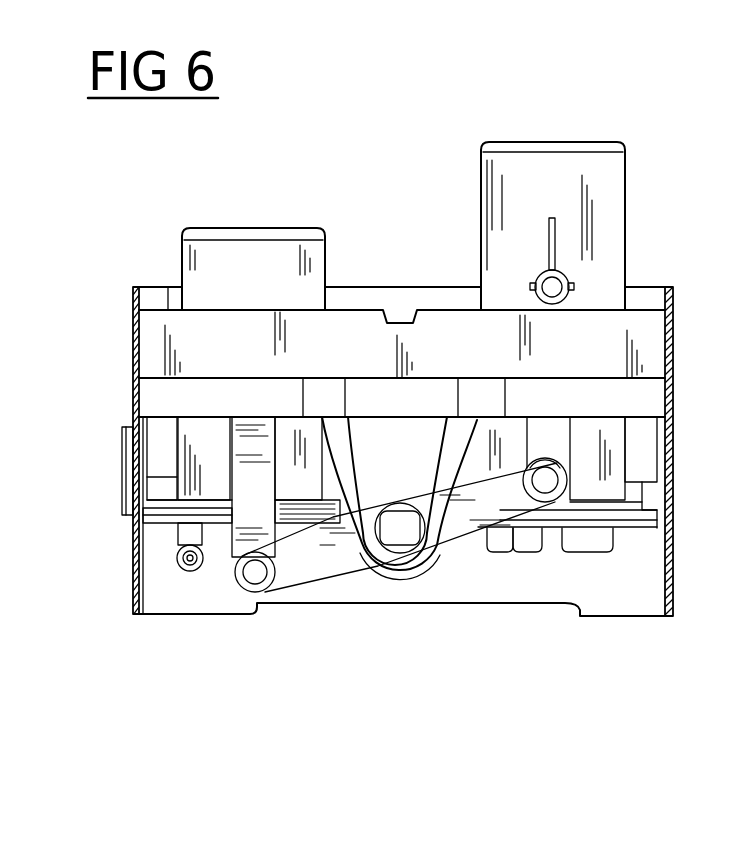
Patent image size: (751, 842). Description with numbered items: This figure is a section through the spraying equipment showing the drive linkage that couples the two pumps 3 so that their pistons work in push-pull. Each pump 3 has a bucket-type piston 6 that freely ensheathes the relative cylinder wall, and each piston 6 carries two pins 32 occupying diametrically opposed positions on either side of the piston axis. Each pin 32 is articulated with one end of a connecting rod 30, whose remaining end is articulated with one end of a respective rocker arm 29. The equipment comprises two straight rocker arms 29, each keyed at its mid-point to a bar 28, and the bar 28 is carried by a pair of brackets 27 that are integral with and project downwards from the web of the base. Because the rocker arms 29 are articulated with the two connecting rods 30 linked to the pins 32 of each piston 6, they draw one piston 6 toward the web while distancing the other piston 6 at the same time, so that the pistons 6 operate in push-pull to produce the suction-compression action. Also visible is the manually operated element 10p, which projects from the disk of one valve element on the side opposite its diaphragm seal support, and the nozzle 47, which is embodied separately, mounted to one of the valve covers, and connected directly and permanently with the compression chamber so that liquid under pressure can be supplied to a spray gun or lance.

The pump 3 is at (178, 258).
The piston 6 is at (547, 130).
The pin 32 is at (540, 278).
The connecting rod 30 is at (248, 448).
The bracket 27 is at (387, 470).
The bar 28 is at (412, 533).
The rocker arm 29 is at (477, 513).
The nozzle 47 is at (183, 567).
The manually operated element 10p is at (580, 542).